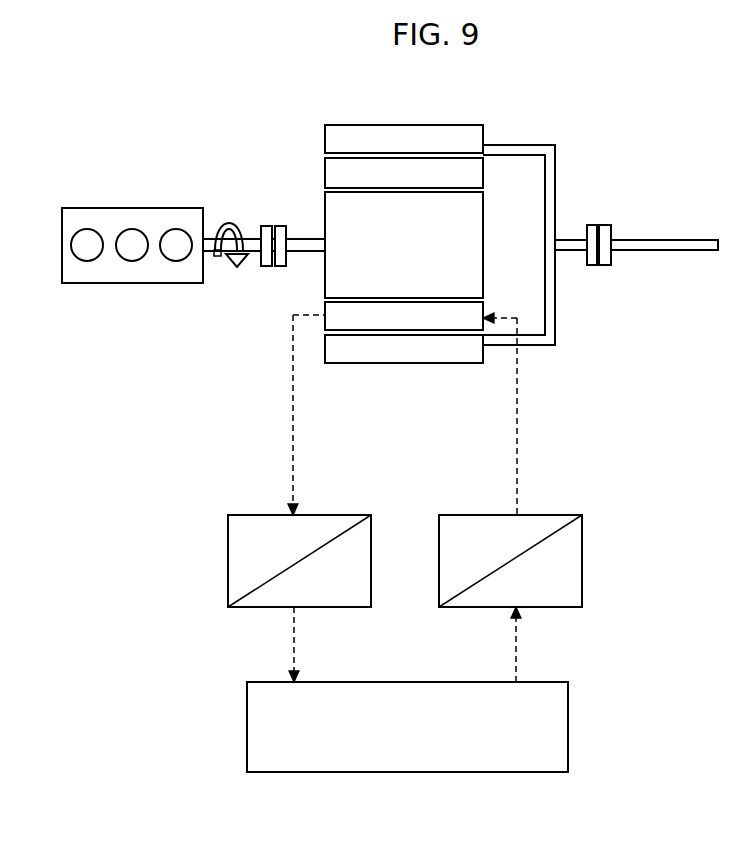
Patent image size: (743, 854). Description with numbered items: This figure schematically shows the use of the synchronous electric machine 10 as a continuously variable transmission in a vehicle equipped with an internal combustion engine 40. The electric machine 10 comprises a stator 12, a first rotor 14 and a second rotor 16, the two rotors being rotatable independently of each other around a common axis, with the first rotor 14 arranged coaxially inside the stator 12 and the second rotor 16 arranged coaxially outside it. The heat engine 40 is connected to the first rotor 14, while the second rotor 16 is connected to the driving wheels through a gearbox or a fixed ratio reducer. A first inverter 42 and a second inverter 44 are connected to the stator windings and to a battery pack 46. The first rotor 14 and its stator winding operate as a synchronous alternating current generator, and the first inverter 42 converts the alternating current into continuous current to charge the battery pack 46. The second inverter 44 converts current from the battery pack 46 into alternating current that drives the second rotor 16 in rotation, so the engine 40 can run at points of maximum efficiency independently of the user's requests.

The synchronous electric machine 10 is at (642, 213).
The stator 12 is at (316, 165).
The first rotor 14 is at (318, 273).
The second rotor 16 is at (492, 130).
The internal combustion engine 40 is at (113, 272).
The first inverter 42 is at (243, 546).
The second inverter 44 is at (568, 545).
The battery pack 46 is at (265, 722).